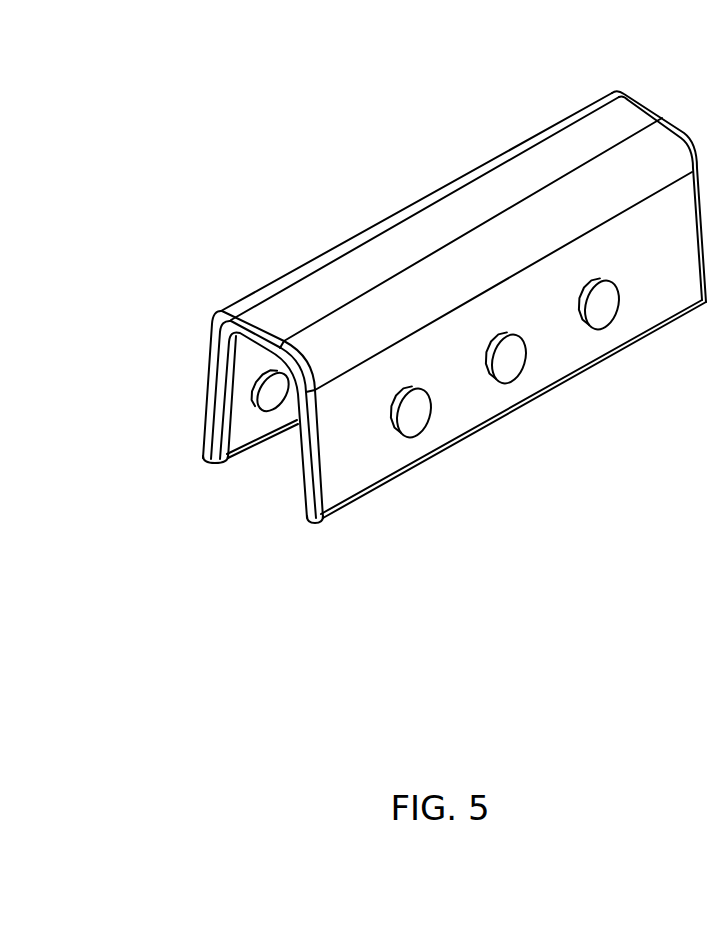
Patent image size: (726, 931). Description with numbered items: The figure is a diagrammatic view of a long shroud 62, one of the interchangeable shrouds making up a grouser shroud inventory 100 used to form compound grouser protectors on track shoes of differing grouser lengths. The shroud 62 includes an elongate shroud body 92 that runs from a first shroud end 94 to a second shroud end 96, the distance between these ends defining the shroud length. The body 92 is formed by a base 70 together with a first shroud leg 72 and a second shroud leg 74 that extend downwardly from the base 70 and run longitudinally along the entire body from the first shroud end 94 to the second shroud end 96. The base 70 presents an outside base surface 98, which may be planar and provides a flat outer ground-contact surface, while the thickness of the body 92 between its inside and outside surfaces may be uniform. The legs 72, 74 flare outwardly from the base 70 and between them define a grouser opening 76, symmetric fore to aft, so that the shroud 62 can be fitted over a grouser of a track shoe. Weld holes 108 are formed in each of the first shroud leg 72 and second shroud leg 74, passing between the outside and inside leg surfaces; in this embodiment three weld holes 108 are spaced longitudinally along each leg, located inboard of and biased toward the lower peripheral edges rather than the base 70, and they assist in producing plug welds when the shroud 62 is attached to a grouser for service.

The long shroud 62 is at (242, 189).
The base 70 is at (277, 312).
The first shroud leg 72 is at (302, 516).
The second shroud leg 74 is at (203, 447).
The grouser opening 76 is at (267, 478).
The elongate shroud body 92 is at (430, 193).
The first shroud end 94 is at (207, 339).
The second shroud end 96 is at (678, 118).
The outside base surface 98 is at (370, 271).
The grouser shroud inventory 100 is at (256, 351).
The weld holes 108 is at (418, 438).